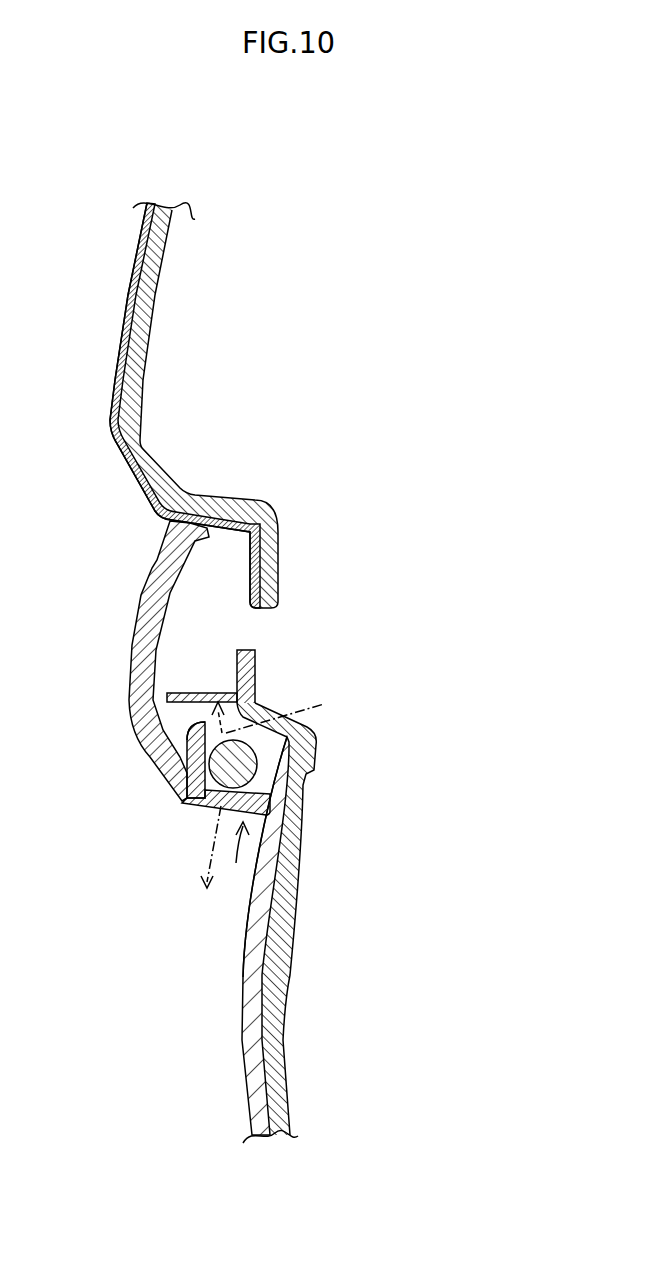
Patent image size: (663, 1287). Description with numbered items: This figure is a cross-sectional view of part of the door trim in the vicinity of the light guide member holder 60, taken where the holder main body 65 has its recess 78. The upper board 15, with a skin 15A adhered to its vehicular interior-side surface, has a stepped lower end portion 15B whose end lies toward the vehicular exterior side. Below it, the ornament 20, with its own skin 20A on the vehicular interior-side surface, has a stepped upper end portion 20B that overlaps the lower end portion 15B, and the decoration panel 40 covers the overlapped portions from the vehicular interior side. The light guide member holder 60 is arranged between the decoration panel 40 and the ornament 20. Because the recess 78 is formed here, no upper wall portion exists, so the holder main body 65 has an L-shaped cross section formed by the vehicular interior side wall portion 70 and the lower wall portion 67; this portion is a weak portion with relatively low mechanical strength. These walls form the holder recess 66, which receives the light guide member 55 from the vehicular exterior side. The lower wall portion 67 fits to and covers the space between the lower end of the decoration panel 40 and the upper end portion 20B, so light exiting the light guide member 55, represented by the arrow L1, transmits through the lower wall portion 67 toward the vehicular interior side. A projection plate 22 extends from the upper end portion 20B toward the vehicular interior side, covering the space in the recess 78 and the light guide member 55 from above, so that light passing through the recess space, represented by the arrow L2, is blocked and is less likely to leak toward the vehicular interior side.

The upper board 15 is at (150, 268).
The skin 15A is at (142, 262).
The lower end portion 15B is at (273, 598).
The decoration panel 40 is at (150, 613).
The projection plate 22 is at (200, 693).
The upper end portion 20B is at (250, 669).
The recess 78 is at (207, 735).
The light guide member 55 is at (240, 762).
The holder main body 65 is at (161, 781).
The vehicular interior side wall portion 70 is at (200, 775).
The lower wall portion 67 is at (212, 801).
The holder recess 66 is at (256, 792).
The light guide member holder 60 is at (236, 855).
The skin 20A is at (252, 1030).
The ornament 20 is at (272, 1032).
The arrow L1 is at (221, 837).
The arrow L2 is at (280, 712).